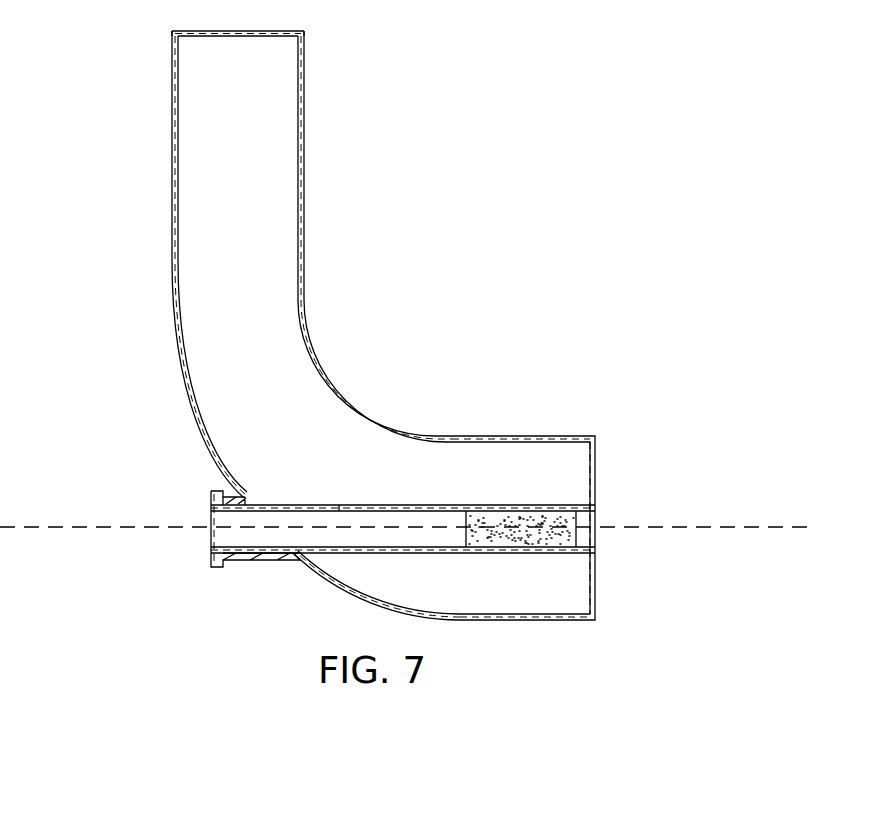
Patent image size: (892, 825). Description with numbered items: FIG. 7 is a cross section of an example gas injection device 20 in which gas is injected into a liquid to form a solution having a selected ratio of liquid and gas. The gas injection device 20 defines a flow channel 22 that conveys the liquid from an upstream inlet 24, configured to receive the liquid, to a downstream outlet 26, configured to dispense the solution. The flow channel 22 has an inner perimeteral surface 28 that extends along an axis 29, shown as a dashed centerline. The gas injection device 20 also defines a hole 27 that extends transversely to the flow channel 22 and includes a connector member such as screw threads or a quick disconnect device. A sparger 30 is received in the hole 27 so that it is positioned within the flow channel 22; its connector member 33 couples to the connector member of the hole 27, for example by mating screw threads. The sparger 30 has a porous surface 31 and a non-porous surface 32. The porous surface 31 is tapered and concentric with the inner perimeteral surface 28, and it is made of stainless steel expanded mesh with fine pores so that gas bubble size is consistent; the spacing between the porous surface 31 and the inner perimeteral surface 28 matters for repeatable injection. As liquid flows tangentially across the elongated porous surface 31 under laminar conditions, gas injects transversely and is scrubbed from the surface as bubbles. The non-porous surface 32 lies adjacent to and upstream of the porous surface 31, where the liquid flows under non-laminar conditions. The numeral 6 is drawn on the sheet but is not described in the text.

The exhaust gas conduit 6 is at (551, 118).
The gas injection device 20 is at (561, 255).
The flow channel 22 is at (270, 302).
The upstream inlet 24 is at (124, 72).
The downstream outlet 26 is at (638, 448).
The hole 27 is at (211, 580).
The inner perimeteral surface 28 is at (485, 438).
The axis 29 is at (766, 527).
The sparger 30 is at (339, 506).
The porous surface 31 is at (500, 520).
The non-porous surface 32 is at (410, 518).
The connector member 33 is at (223, 493).